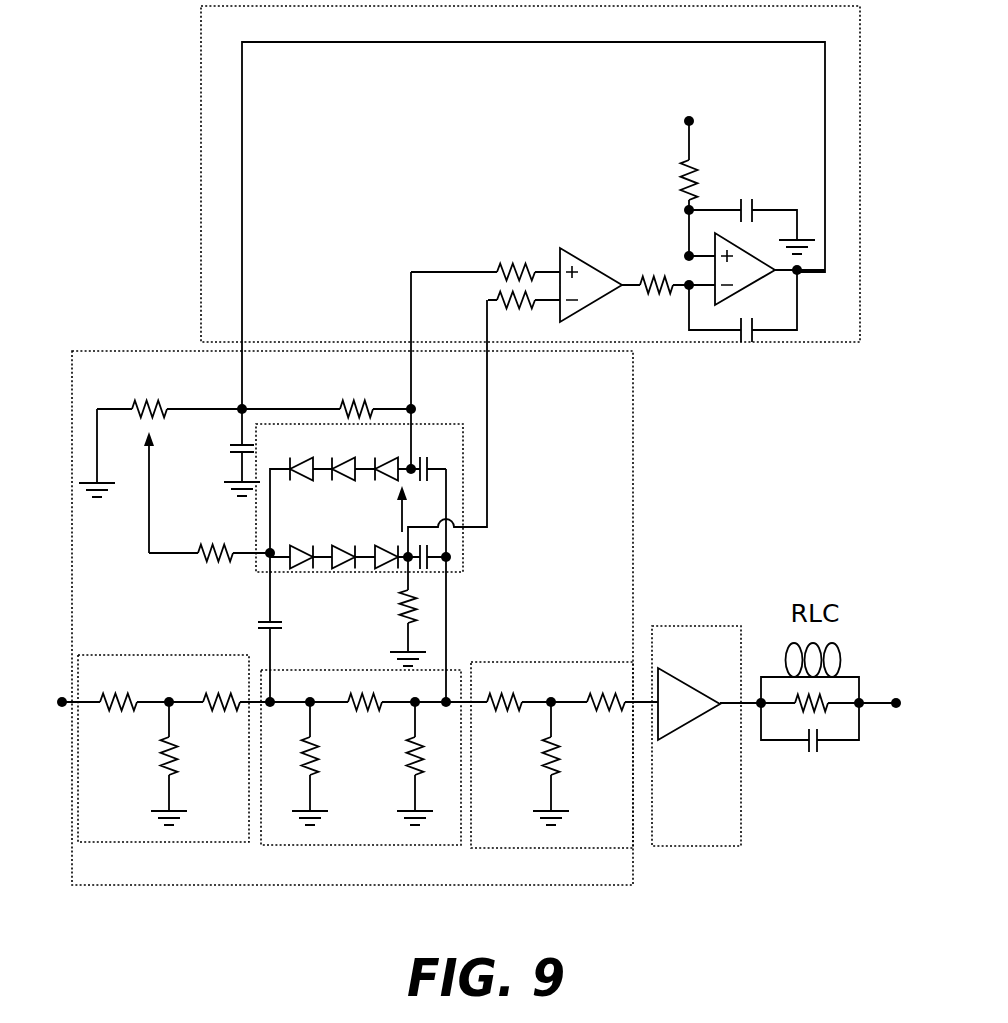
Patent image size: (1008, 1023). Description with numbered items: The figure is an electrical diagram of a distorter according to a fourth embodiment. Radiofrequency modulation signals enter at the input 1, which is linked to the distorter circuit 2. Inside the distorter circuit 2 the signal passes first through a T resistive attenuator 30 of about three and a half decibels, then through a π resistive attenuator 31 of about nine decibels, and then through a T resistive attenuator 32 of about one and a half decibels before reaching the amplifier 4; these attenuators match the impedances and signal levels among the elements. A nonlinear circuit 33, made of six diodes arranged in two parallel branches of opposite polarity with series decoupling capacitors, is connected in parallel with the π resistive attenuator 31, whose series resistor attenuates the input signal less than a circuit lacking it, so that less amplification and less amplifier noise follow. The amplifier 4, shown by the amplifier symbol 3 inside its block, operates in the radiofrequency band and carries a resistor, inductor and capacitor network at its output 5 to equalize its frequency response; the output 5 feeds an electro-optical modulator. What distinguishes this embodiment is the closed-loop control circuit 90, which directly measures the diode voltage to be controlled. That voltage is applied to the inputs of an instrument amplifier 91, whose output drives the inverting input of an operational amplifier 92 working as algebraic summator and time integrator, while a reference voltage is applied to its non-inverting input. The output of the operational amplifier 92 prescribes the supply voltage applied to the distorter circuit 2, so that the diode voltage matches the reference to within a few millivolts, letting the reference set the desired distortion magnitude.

The input 1 is at (62, 697).
The distorter circuit 2 is at (375, 578).
The amplifier 3 is at (647, 701).
The amplifier 4 is at (680, 625).
The output 5 is at (896, 700).
The T resistive attenuator 30 is at (155, 656).
The π resistive attenuator 31 is at (355, 670).
The T resistive attenuator 32 is at (563, 658).
The nonlinear circuit 33 is at (463, 562).
The closed-loop control circuit 90 is at (498, 207).
The instrument amplifier 91 is at (576, 260).
The operational amplifier 92 is at (767, 260).